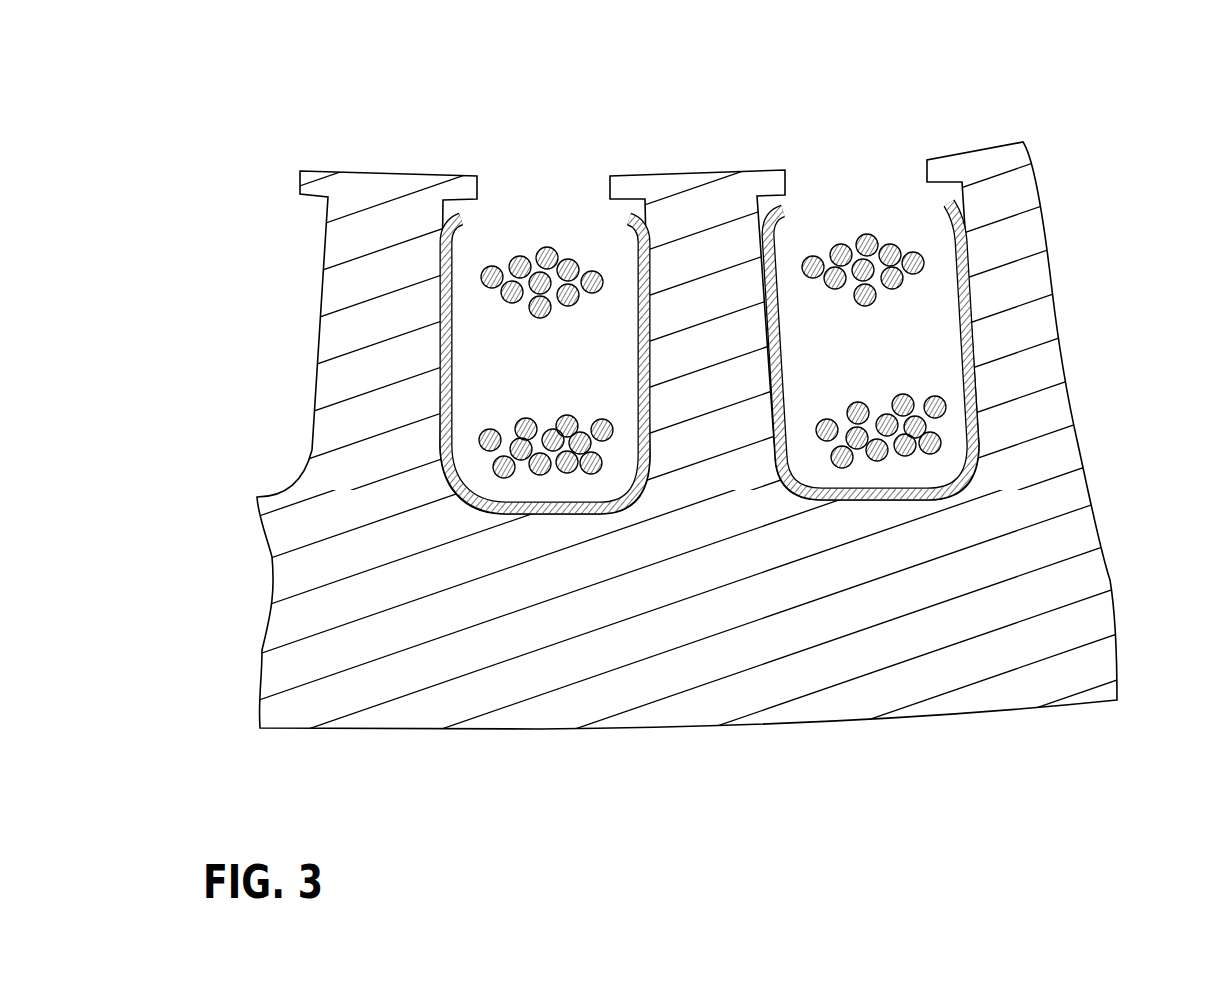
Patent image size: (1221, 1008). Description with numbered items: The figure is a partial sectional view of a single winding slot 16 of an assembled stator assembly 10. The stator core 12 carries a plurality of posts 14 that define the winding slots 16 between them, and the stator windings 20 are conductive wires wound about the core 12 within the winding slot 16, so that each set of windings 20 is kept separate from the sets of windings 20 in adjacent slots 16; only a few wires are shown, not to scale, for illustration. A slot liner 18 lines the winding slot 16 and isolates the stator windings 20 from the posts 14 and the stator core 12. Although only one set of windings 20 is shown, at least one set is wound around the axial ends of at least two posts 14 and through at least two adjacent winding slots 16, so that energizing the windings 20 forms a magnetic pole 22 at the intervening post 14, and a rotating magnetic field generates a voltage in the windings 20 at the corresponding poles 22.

The stator assembly 10 is at (357, 69).
The stator core 12 is at (547, 673).
The posts 14 is at (353, 325).
The winding slot 16 is at (250, 163).
The slot liner 18 is at (653, 352).
The stator windings 20 is at (541, 248).
The magnetic pole 22 is at (713, 93).